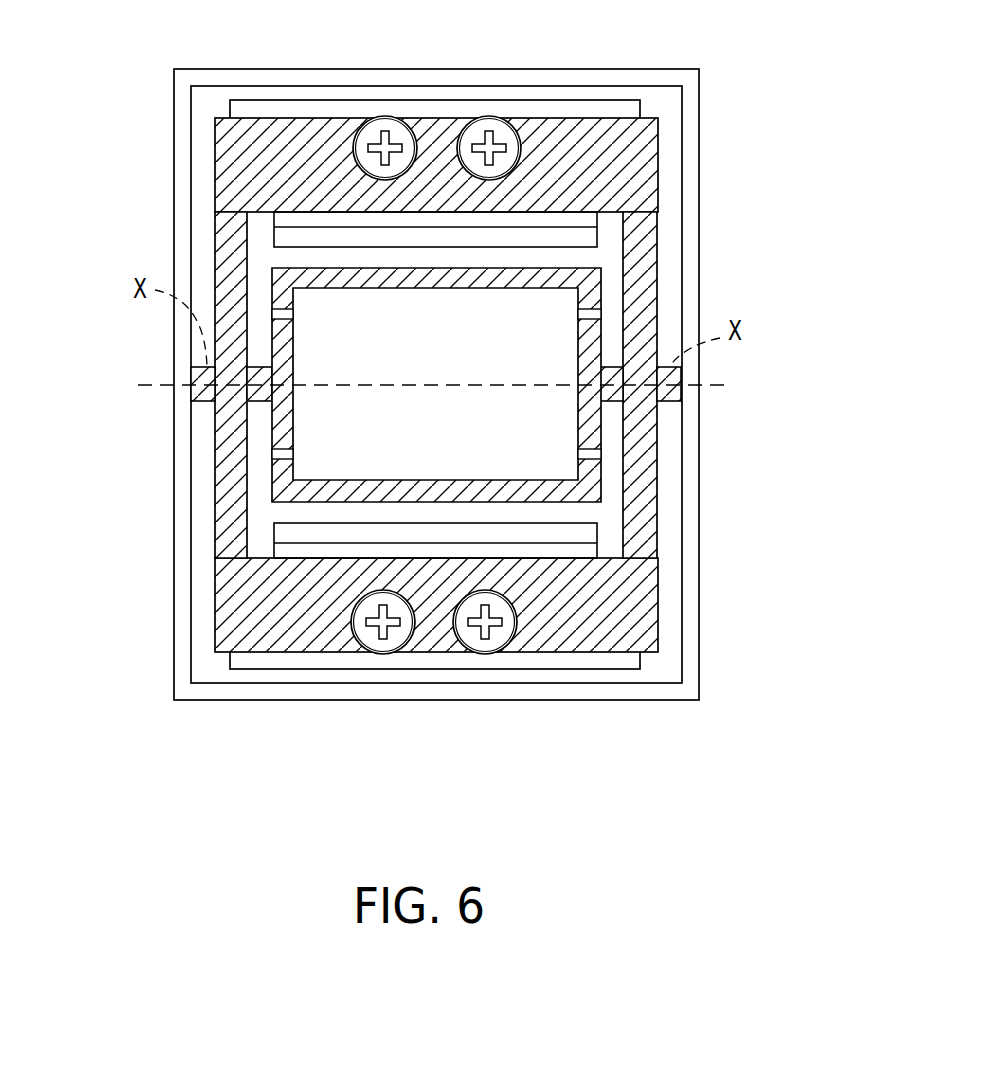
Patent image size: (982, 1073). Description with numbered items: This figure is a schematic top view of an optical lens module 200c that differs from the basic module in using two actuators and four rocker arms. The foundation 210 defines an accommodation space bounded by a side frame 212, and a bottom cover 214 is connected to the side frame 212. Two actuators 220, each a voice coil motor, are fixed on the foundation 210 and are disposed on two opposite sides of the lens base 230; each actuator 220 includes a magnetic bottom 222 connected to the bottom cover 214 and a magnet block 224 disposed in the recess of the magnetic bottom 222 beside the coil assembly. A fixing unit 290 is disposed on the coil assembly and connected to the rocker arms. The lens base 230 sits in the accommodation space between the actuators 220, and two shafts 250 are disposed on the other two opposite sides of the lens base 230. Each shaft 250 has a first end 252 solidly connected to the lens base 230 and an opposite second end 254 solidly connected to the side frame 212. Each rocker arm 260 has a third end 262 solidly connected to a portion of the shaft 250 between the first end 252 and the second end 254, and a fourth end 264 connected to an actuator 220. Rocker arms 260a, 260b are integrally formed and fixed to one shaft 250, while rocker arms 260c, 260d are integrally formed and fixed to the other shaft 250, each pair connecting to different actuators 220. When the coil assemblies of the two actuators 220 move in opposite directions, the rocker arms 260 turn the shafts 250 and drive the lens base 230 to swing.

The optical lens module 200c is at (777, 885).
The foundation 210 is at (500, 420).
The side frame 212 is at (692, 645).
The bottom cover 214 is at (658, 672).
The actuator 220 is at (432, 113).
The magnetic bottom 222 is at (327, 535).
The magnet block 224 is at (616, 150).
The lens base 230 is at (590, 348).
The shaft 250 is at (193, 393).
The first end 252 is at (269, 398).
The second end 254 is at (186, 383).
The rocker arm 260 is at (443, 372).
The rocker arm 260a is at (223, 285).
The rocker arm 260b is at (232, 505).
The rocker arm 260c is at (640, 253).
The rocker arm 260d is at (640, 457).
The third end 262 is at (229, 420).
The fourth end 264 is at (229, 556).
The fixing unit 290 is at (547, 157).